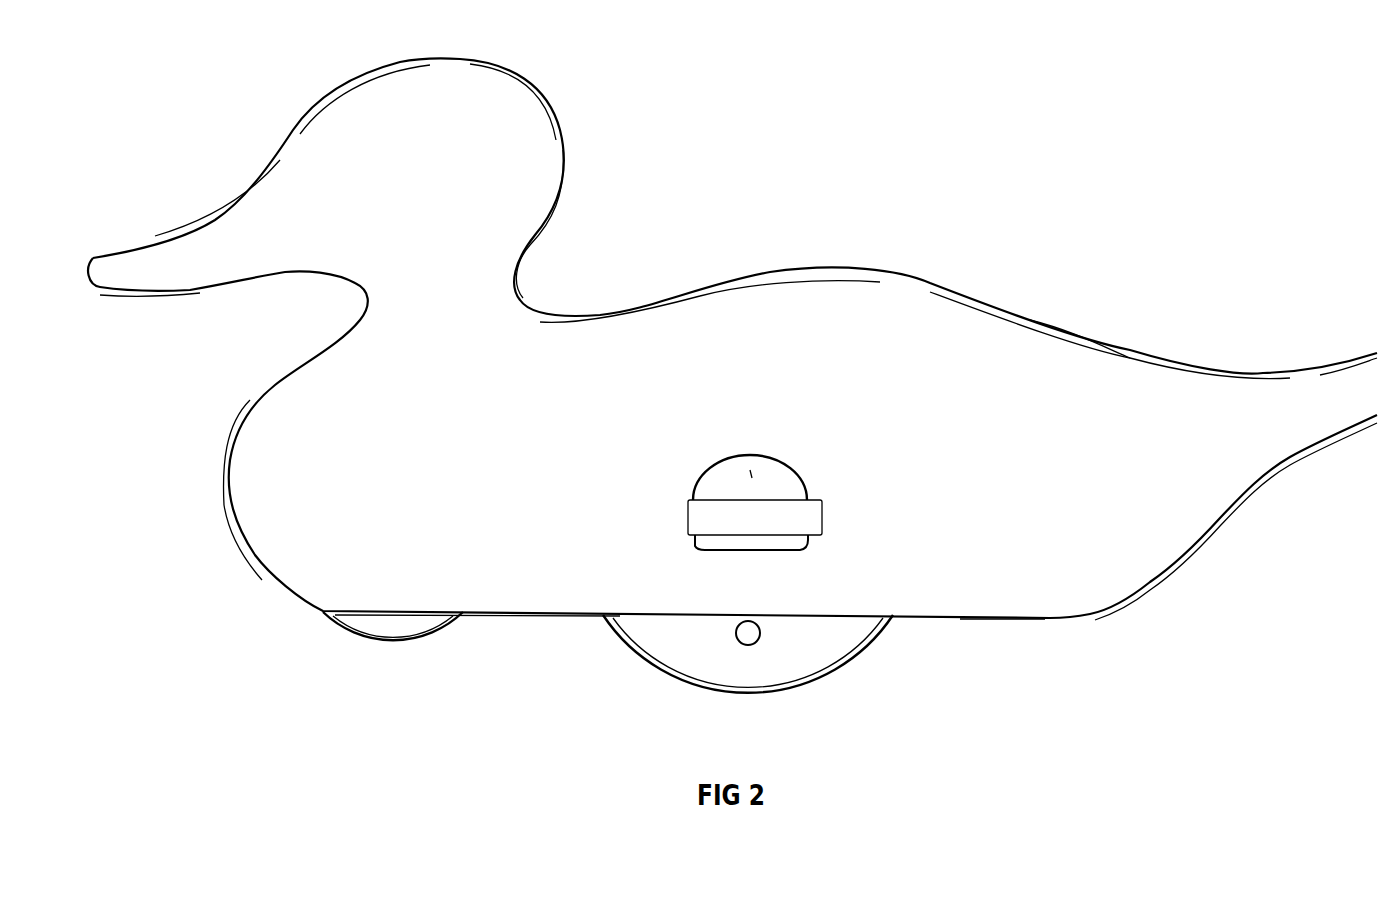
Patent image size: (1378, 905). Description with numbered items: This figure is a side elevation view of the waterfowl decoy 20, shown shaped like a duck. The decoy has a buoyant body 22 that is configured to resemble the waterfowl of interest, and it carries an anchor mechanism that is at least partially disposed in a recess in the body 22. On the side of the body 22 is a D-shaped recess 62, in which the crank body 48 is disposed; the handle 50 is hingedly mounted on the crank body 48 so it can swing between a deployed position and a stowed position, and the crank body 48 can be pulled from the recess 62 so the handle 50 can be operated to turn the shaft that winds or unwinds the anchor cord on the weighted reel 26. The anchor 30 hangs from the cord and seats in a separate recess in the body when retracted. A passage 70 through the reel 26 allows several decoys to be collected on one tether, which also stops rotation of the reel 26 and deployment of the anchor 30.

The waterfowl decoy 20 is at (1030, 270).
The buoyant body 22 is at (1027, 385).
The weighted reel 26 is at (842, 632).
The anchor 30 is at (403, 626).
The crank body 48 is at (753, 477).
The handle 50 is at (783, 522).
The recess 62 is at (712, 458).
The passage 70 is at (757, 638).